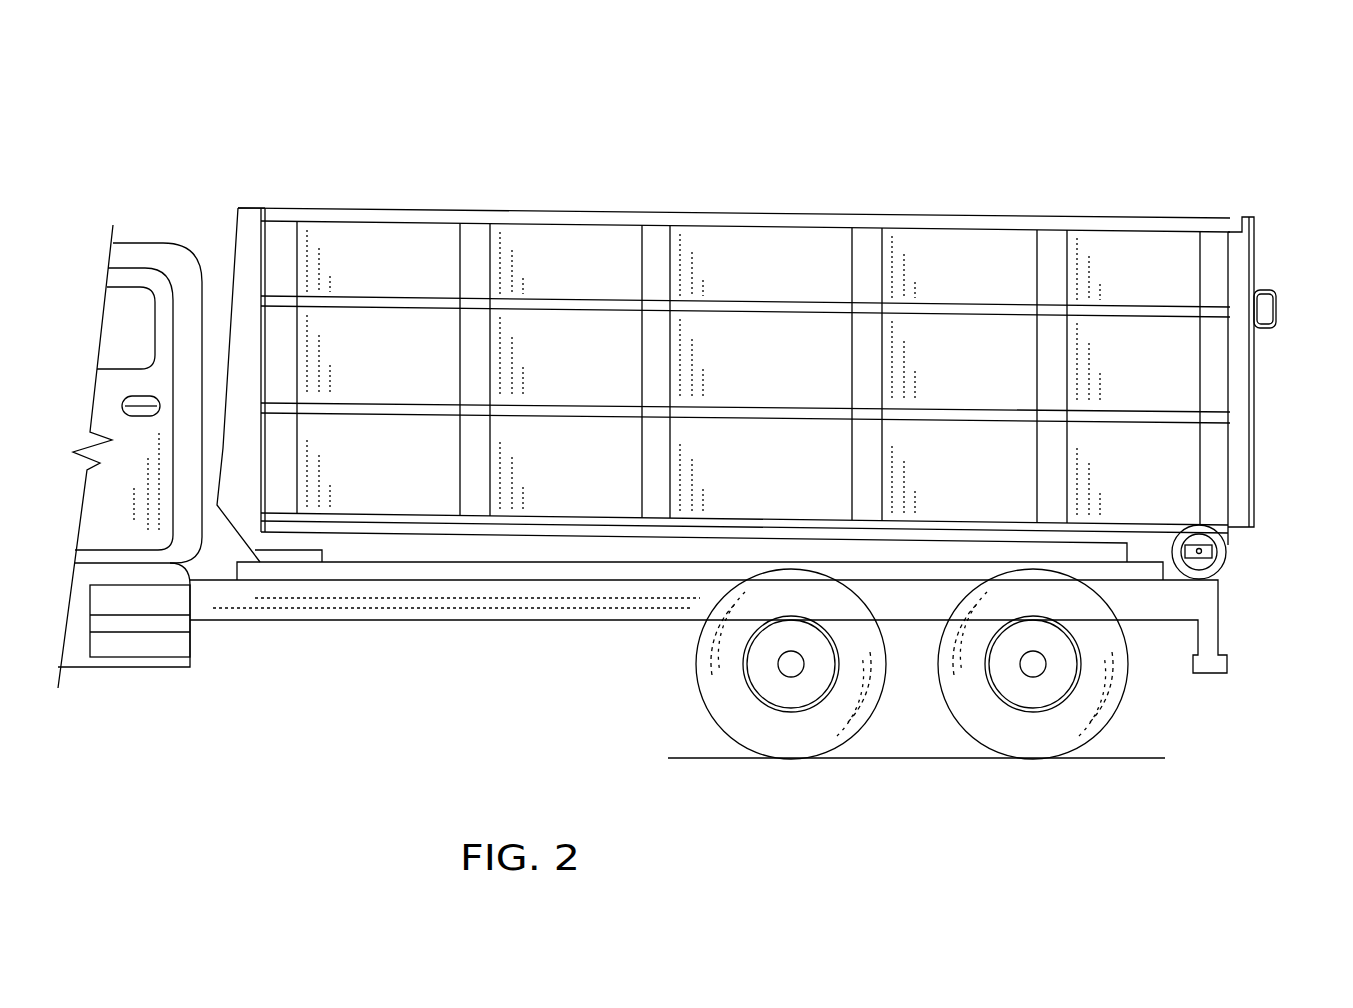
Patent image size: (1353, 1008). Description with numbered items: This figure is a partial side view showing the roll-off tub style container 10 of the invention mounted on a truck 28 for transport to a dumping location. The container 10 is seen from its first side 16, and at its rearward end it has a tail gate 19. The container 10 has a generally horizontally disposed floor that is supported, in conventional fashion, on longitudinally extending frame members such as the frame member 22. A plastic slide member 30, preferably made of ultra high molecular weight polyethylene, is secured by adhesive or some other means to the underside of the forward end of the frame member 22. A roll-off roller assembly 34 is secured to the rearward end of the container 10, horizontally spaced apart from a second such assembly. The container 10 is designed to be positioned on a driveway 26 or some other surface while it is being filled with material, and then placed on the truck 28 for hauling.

The roll-off tub style container 10 is at (628, 158).
The truck 28 is at (144, 238).
The first side 16 is at (772, 376).
The tail gate 19 is at (1240, 438).
The roll-off roller assembly 34 is at (1256, 571).
The frame member 22 is at (375, 543).
The plastic slide member 30 is at (292, 557).
The driveway 26 is at (875, 760).